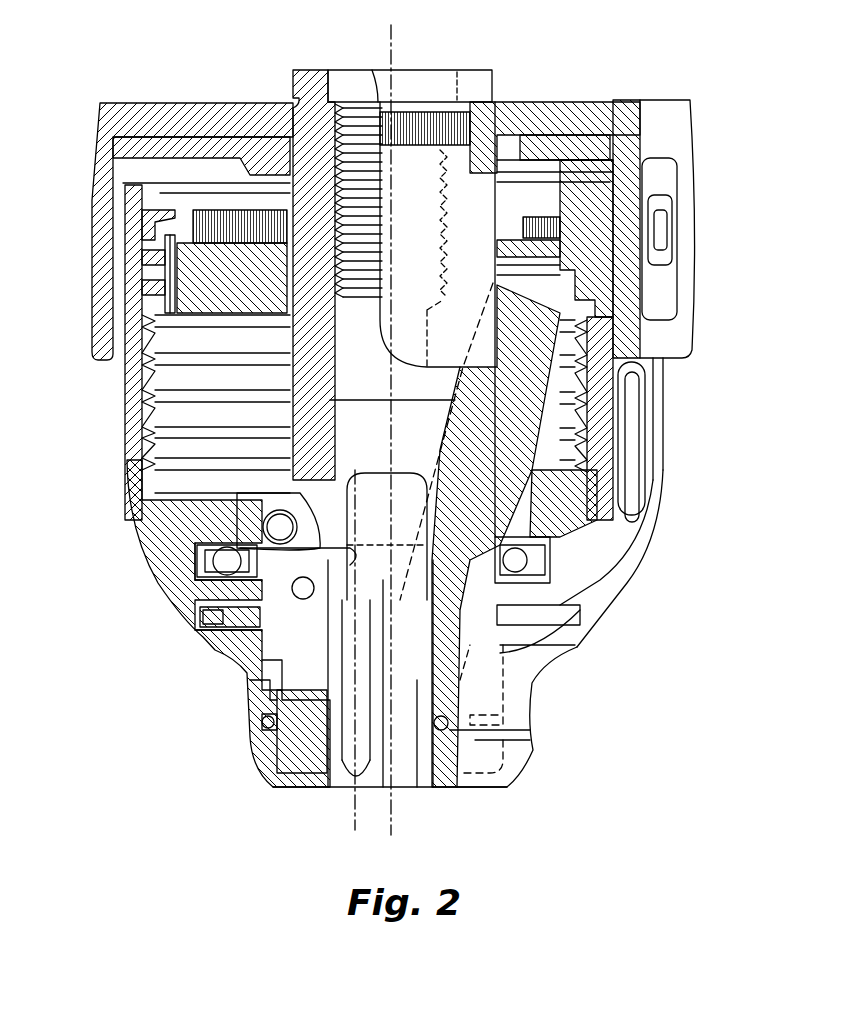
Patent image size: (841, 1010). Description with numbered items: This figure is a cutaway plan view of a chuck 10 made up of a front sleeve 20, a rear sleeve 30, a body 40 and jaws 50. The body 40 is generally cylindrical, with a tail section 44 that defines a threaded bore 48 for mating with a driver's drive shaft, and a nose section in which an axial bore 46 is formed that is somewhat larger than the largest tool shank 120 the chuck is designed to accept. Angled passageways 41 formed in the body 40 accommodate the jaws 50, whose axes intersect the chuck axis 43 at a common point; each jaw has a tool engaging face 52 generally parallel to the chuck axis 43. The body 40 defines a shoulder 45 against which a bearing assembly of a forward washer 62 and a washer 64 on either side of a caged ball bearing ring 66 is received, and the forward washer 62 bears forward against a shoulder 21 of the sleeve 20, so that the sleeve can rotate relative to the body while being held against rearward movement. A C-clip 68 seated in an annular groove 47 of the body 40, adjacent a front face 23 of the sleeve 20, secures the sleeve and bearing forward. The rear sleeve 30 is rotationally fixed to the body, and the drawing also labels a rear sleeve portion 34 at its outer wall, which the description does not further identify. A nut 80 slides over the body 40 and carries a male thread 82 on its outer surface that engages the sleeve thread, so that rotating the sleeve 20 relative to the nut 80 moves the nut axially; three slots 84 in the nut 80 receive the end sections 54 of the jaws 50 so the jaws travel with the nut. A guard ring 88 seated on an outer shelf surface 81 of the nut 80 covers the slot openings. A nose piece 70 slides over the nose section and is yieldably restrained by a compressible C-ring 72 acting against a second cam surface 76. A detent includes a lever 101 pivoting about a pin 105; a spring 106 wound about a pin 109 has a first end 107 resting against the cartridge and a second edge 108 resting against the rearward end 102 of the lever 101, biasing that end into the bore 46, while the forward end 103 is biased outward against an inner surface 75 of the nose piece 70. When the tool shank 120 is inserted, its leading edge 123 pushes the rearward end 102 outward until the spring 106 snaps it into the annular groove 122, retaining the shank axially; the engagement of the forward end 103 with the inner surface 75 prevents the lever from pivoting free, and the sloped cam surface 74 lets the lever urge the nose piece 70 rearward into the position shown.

The chuck 10 is at (88, 383).
The front sleeve 20 is at (665, 440).
The shoulder 21 is at (193, 607).
The front face 23 is at (203, 637).
The rear sleeve 30 is at (660, 122).
The rear sleeve 34 is at (117, 172).
The body 40 is at (307, 392).
The passageways 41 is at (555, 493).
The chuck axis 43 is at (395, 50).
The tail section 44 is at (293, 82).
The shoulder 45 is at (540, 555).
The axial bore 46 is at (336, 787).
The annular groove 47 is at (423, 640).
The threaded bore 48 is at (347, 70).
The jaws 50 is at (560, 375).
The tool engaging face 52 is at (391, 790).
The end sections 54 is at (497, 264).
The forward washer 62 is at (190, 603).
The washer 64 is at (200, 560).
The caged ball bearing ring 66 is at (193, 560).
The C-clip 68 is at (225, 630).
The nose piece 70 is at (260, 740).
The C-ring 72 is at (264, 717).
The cam surface 74 is at (307, 773).
The inner surface 75 is at (260, 655).
The second cam surface 76 is at (268, 728).
The nut 80 is at (247, 268).
The outer shelf surface 81 is at (173, 287).
The male thread 82 is at (153, 218).
The slots 84 is at (563, 278).
The guard ring 88 is at (163, 272).
The lever 101 is at (378, 575).
The rearward end 102 is at (320, 600).
The forward end 103 is at (250, 680).
The pin 105 is at (210, 617).
The spring 106 is at (240, 547).
The first end 107 is at (233, 503).
The second edge 108 is at (380, 540).
The pin 109 is at (262, 520).
The tool shank 120 is at (423, 797).
The annular groove 122 is at (525, 605).
The leading edge 123 is at (404, 470).